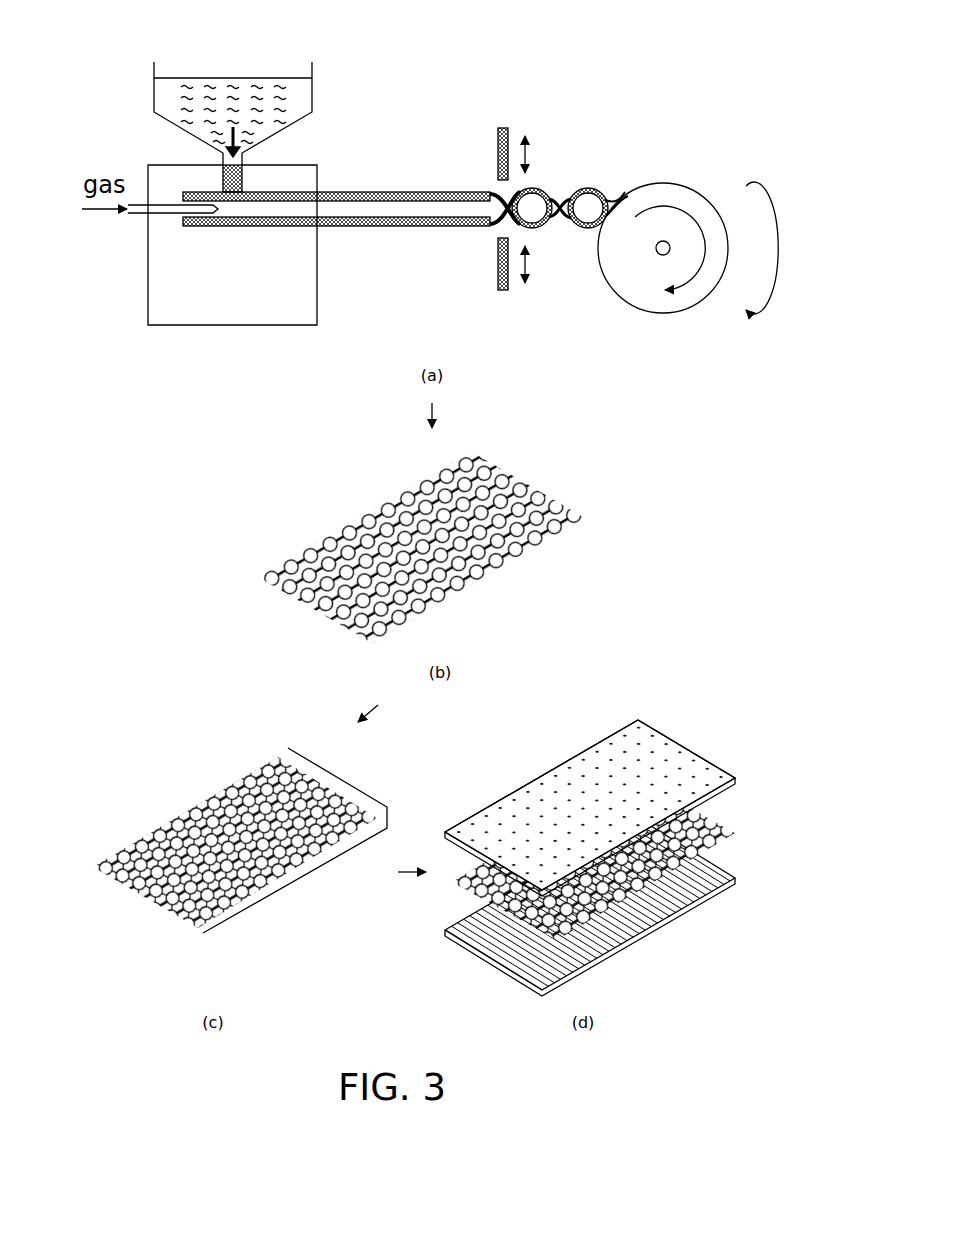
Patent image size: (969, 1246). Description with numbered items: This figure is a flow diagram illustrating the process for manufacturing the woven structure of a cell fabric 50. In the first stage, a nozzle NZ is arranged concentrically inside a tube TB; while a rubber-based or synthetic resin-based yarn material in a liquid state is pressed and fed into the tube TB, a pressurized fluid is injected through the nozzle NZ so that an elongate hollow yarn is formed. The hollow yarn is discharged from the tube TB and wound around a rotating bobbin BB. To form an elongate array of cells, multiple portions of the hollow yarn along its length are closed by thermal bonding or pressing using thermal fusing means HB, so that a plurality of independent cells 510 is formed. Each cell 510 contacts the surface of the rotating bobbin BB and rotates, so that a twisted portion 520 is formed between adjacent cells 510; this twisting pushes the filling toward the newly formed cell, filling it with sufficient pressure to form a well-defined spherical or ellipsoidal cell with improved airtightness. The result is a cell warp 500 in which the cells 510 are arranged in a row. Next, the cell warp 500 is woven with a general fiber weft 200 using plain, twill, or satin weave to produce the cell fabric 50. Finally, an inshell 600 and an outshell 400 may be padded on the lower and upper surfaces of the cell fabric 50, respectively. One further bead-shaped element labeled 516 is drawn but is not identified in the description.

The tube TB is at (296, 192).
The gas nozzle NZ is at (140, 218).
The thermal fusing means HB is at (498, 262).
The bead 516 is at (542, 190).
The gas cell warp 500 is at (606, 172).
The twisted portion 520 is at (575, 228).
The rotating bobbin BB is at (653, 315).
The gas cell fabric 50 is at (593, 492).
The gas cell 510 is at (176, 918).
The weft 200 is at (295, 840).
The outshell 400 is at (673, 748).
The inshell 600 is at (725, 874).